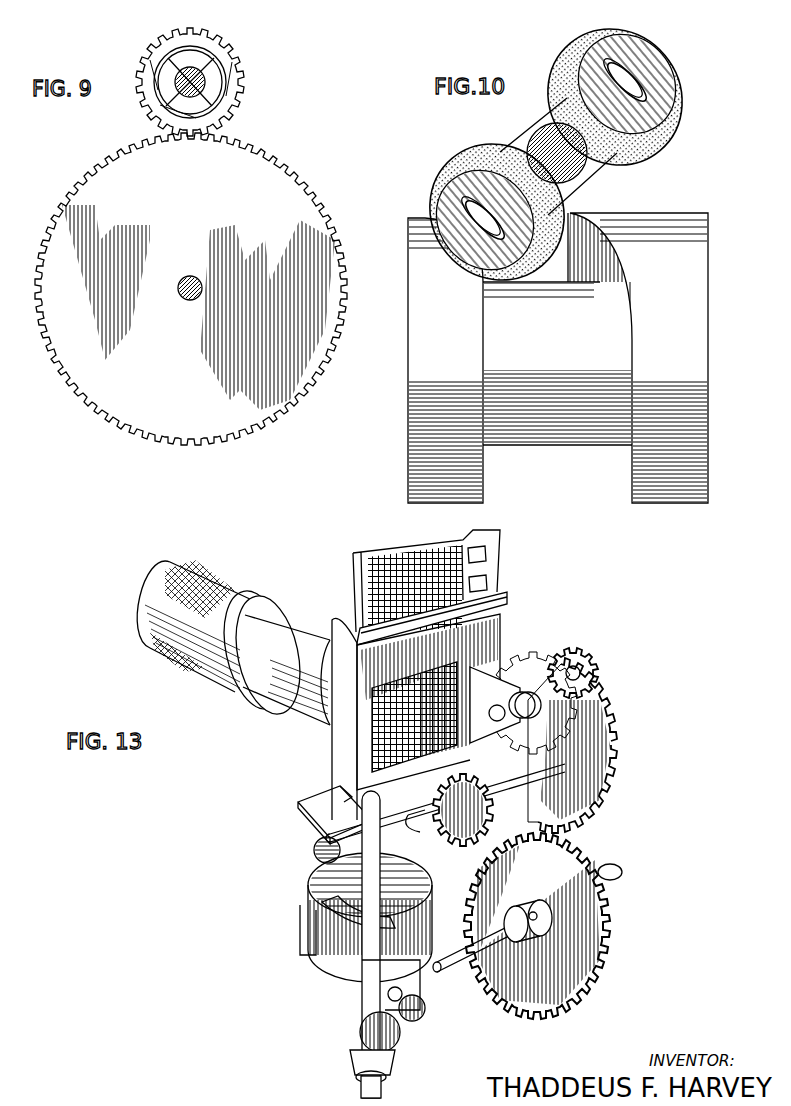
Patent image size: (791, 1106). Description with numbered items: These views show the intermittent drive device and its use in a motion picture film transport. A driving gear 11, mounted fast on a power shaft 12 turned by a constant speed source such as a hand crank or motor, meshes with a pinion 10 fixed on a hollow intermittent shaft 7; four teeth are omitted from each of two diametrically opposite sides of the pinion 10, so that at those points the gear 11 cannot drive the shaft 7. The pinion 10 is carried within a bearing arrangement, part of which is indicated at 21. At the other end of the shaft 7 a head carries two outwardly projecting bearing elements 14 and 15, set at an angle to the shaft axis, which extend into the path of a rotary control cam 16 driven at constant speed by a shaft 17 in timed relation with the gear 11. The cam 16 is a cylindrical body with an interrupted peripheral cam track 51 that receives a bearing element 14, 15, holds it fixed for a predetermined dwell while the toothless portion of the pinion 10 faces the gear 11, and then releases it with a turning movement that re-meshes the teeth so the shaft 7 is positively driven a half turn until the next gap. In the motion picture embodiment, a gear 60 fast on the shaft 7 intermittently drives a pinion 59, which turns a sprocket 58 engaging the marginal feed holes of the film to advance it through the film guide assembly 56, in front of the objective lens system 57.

In FIG. 9, the hollow shaft 7 is at (207, 75).
In FIG. 13, the hollow shaft 7 is at (433, 820).
In FIG. 9, the pinion 10 is at (244, 92).
In FIG. 13, the pinion 10 is at (457, 785).
In FIG. 9, the driving gear 11 is at (282, 163).
In FIG. 13, the driving gear 11 is at (607, 926).
In FIG. 9, the shaft 12 is at (187, 302).
In FIG. 13, the bearing element 14 is at (313, 850).
In FIG. 10, the bearing element 15 is at (667, 103).
In FIG. 10, the rotary cam 16 is at (660, 220).
In FIG. 13, the rotary cam 16 is at (340, 962).
In FIG. 10, the shaft 17 is at (578, 163).
In FIG. 9, the bearing pin 21 is at (201, 52).
In FIG. 10, the cam track 51 is at (620, 270).
In FIG. 13, the film guide assembly 56 is at (490, 627).
In FIG. 13, the objective lens system 57 is at (233, 642).
In FIG. 13, the sprocket 58 is at (553, 648).
In FIG. 13, the pinion 59 is at (580, 660).
In FIG. 13, the gear 60 is at (613, 757).